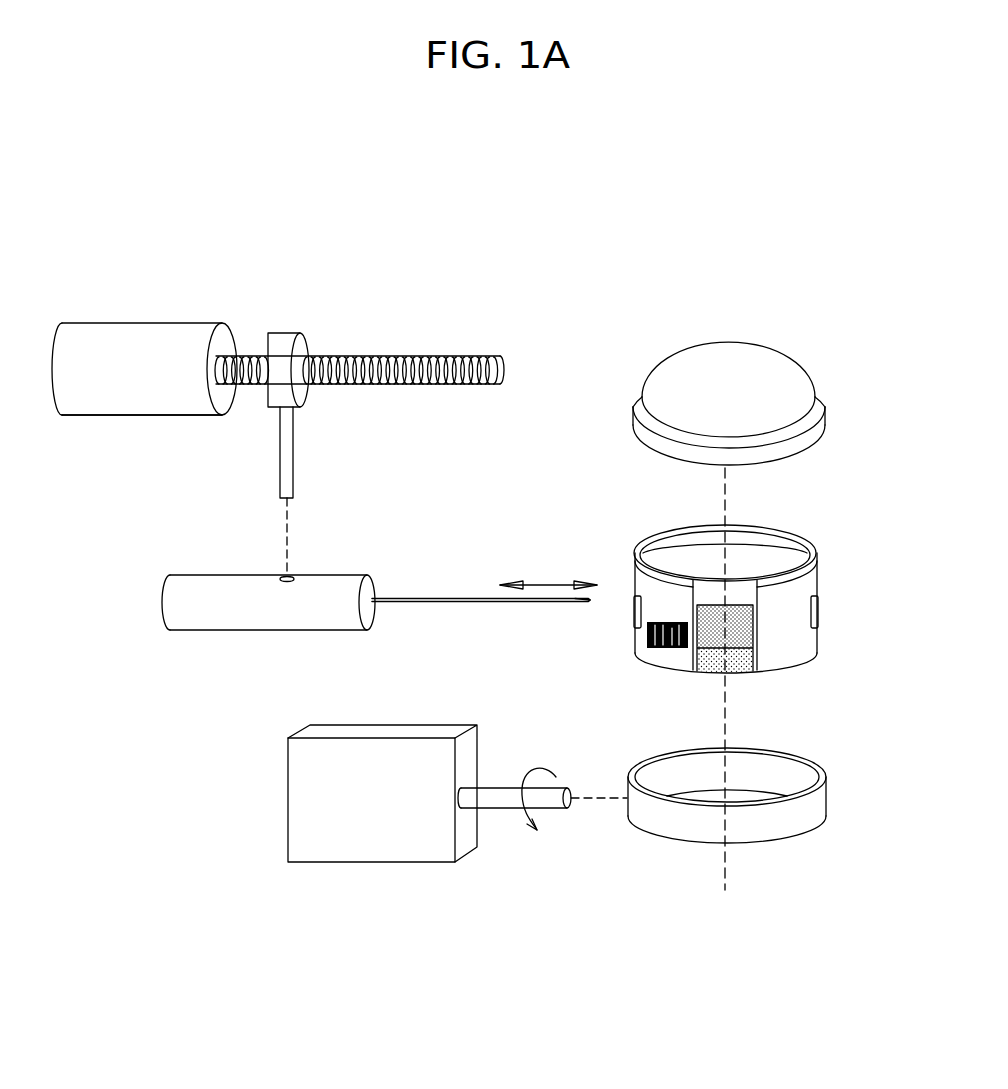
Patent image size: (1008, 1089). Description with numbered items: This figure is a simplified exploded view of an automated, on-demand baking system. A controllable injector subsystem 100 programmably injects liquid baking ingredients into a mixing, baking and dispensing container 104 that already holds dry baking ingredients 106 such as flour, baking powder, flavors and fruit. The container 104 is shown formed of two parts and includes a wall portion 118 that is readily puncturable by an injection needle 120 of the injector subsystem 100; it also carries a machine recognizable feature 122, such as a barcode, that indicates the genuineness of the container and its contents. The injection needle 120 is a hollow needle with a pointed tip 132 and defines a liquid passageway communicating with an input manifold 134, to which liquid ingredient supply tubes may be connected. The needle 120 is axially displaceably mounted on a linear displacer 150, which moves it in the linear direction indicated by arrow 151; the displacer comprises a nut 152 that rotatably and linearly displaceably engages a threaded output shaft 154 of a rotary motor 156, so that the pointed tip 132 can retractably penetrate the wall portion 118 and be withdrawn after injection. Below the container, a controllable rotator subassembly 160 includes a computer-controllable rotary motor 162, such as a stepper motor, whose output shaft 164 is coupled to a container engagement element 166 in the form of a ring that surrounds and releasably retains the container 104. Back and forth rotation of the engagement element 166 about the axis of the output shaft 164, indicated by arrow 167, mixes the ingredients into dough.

The controllable injector subsystem 100 is at (147, 520).
The mixing, baking and dispensing container 104 is at (782, 375).
The dry baking ingredients 106 is at (733, 612).
The wall portion 118 is at (665, 383).
The injection needle 120 is at (483, 598).
The machine recognizable feature 122 is at (668, 648).
The pointed tip 132 is at (589, 600).
The input manifold 134 is at (212, 615).
The linear displacer 150 is at (125, 335).
The arrow 151 is at (553, 584).
The nut 152 is at (285, 338).
The threaded output shaft 154 is at (393, 372).
The rotary motor 156 is at (152, 400).
The controllable rotator subassembly 160 is at (295, 887).
The computer-controllable rotary motor 162 is at (305, 806).
The output shaft 164 is at (500, 799).
The container engagement element 166 is at (820, 806).
The arrow 167 is at (519, 762).